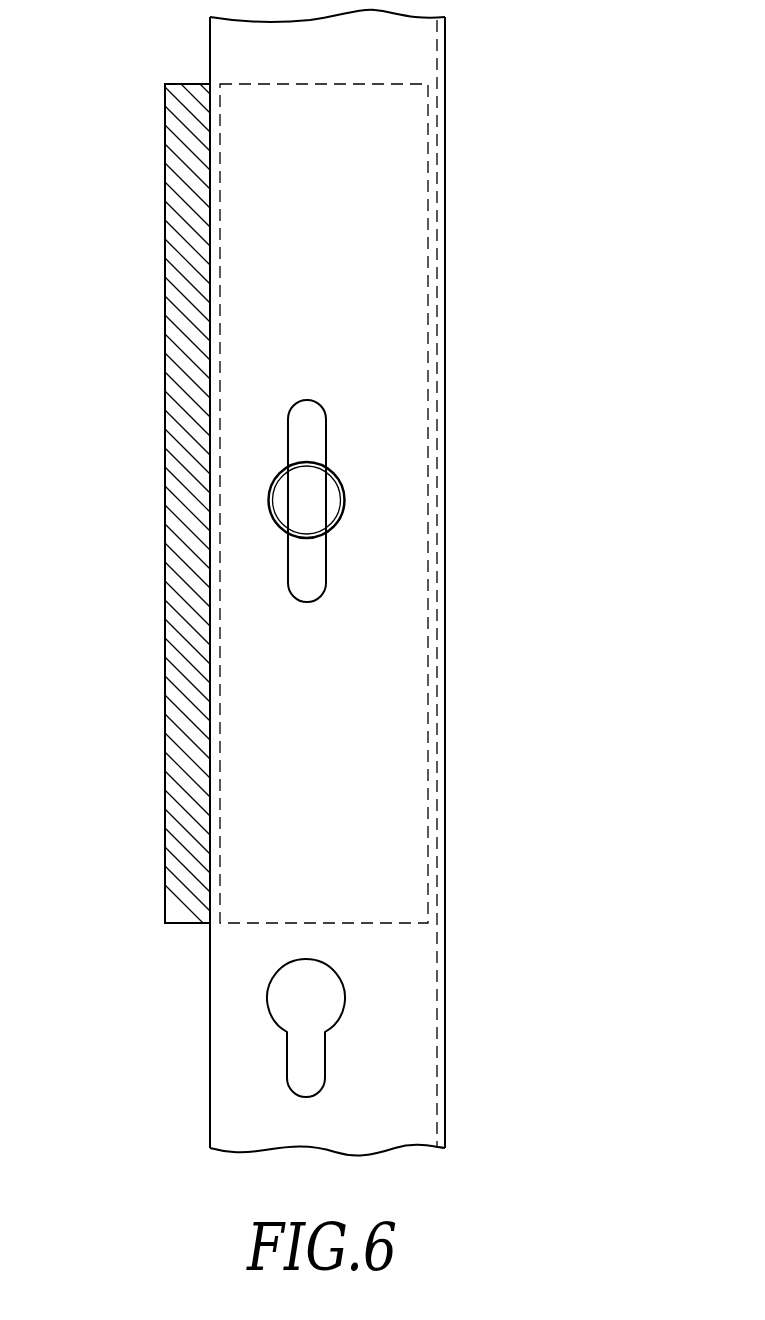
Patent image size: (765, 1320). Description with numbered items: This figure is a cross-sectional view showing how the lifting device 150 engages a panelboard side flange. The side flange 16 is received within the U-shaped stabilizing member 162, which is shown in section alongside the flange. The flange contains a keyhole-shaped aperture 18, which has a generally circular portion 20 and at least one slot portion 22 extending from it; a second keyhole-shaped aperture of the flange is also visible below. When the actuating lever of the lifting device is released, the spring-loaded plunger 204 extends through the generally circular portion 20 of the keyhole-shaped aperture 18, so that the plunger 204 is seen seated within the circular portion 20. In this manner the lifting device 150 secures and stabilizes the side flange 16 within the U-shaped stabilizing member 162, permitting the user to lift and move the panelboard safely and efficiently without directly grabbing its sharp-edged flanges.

The side flange 16 is at (420, 46).
The U-shaped stabilizing member 162 is at (175, 450).
The slot portion 22 is at (302, 415).
The keyhole-shaped aperture 18 is at (333, 458).
The generally circular portion 20 is at (337, 530).
The plunger 204 is at (320, 494).
The lifting device 150 is at (558, 1015).